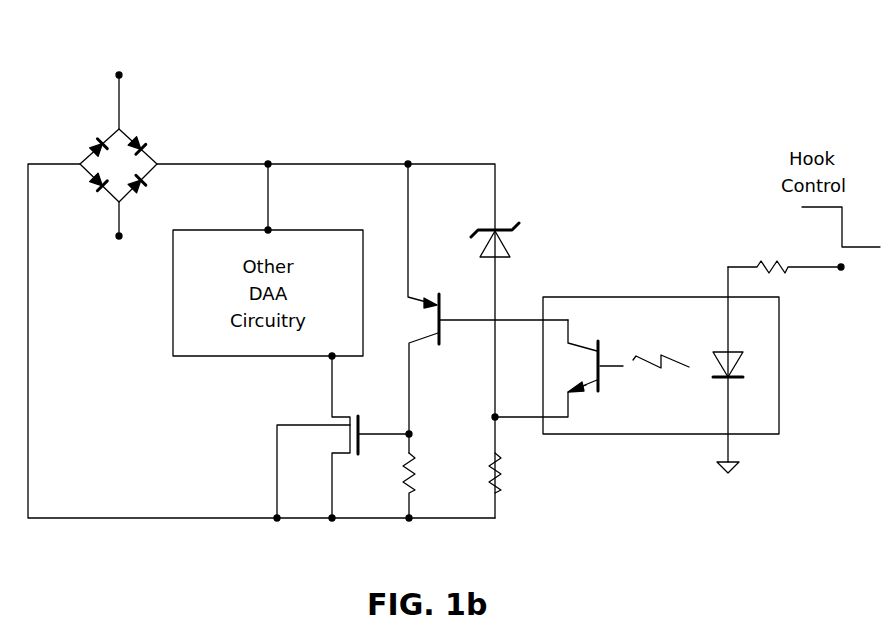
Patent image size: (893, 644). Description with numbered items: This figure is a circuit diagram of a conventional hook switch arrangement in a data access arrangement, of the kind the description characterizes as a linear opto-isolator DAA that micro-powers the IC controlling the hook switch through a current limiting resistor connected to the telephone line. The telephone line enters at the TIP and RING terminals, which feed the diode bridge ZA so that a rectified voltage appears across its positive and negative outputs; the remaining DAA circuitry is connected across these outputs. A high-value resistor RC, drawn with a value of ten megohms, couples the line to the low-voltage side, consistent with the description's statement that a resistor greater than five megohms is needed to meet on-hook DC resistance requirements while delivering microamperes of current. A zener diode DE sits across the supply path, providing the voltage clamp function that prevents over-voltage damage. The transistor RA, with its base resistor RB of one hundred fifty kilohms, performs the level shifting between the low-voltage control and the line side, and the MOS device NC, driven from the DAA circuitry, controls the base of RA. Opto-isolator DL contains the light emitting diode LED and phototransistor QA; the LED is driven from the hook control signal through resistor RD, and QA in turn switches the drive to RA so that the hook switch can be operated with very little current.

The tip line terminal TIP is at (135, 100).
The ring line terminal RING is at (88, 220).
The diode bridge rectifier ZA is at (117, 158).
The nmos transistor NC is at (338, 437).
The PNP transistor RA is at (488, 308).
The 150K resistor RB is at (436, 485).
The zener diode DE is at (514, 237).
The 10MEG resistor RC is at (528, 457).
The optocoupler DL is at (637, 370).
The optocoupler phototransistor QA is at (628, 361).
The optocoupler LED is at (740, 370).
The 100 ohm resistor RD is at (786, 241).